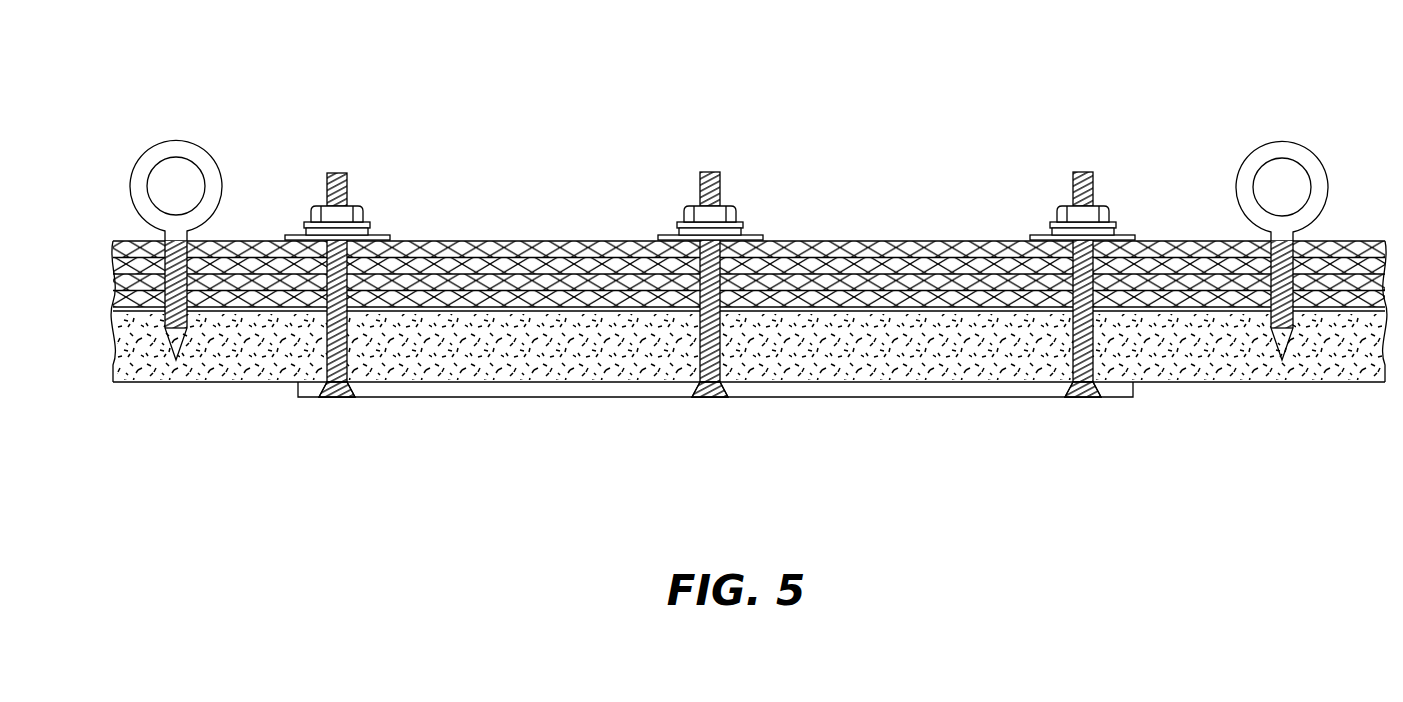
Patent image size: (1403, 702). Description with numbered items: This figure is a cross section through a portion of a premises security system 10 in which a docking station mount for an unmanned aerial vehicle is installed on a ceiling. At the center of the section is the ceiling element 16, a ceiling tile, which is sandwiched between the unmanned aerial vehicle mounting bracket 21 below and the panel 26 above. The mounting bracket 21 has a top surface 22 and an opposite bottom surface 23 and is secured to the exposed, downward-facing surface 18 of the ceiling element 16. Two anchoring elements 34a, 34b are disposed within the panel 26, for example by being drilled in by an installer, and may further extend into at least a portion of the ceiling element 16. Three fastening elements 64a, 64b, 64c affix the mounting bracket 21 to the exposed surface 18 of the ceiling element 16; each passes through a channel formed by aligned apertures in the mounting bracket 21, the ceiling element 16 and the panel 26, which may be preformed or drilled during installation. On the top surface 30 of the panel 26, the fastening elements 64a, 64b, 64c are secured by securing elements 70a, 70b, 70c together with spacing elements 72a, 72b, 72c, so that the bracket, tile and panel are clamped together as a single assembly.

The premises security system 10 is at (1083, 66).
The ceiling element 16 is at (148, 370).
The exposed surface 18 is at (197, 386).
The unmanned aerial vehicle mounting bracket 21 is at (454, 399).
The top surface 22 is at (578, 381).
The bottom surface 23 is at (527, 399).
The panel 26 is at (526, 268).
The top surface 30 is at (865, 240).
The anchoring element 34a is at (172, 140).
The anchoring element 34b is at (1281, 141).
The fastening element 64a is at (333, 399).
The fastening element 64b is at (705, 399).
The fastening element 64c is at (1080, 399).
The securing element 70a is at (362, 208).
The securing element 70b is at (735, 208).
The securing element 70c is at (1106, 208).
The spacing element 72a is at (292, 234).
The spacing element 72b is at (664, 234).
The spacing element 72c is at (1037, 234).